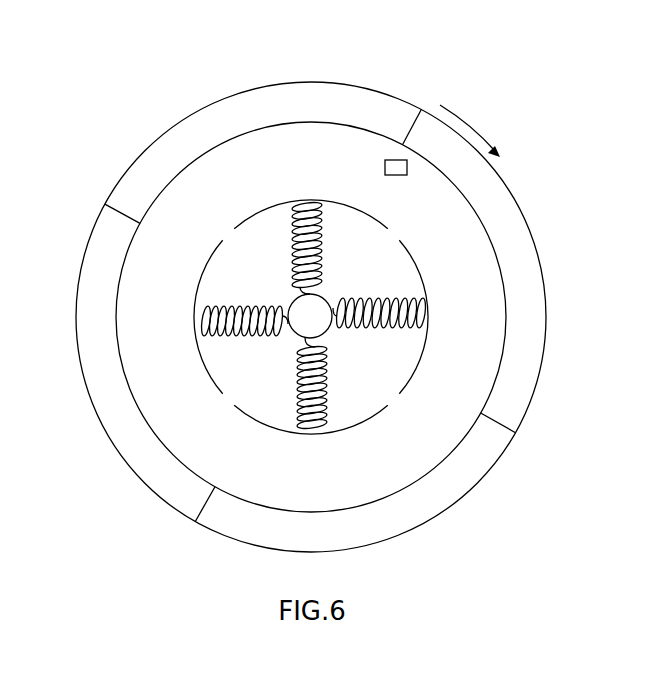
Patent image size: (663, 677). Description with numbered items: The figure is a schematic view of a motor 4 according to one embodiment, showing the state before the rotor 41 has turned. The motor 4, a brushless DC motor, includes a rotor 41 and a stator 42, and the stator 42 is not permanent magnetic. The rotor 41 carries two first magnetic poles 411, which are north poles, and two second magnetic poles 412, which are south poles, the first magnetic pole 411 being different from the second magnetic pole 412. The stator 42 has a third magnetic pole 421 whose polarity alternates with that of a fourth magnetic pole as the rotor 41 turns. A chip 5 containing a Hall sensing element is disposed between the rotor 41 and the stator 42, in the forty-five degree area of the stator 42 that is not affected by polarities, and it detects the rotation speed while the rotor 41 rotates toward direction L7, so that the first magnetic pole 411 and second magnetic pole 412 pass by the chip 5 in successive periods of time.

The motor 4 is at (96, 103).
The rotor 41 is at (343, 74).
The first magnetic pole 411 is at (300, 97).
The second magnetic pole 412 is at (87, 330).
The stator 42 is at (466, 313).
The third magnetic pole 421 is at (257, 208).
The chip 5 is at (393, 160).
The direction L7 is at (470, 129).